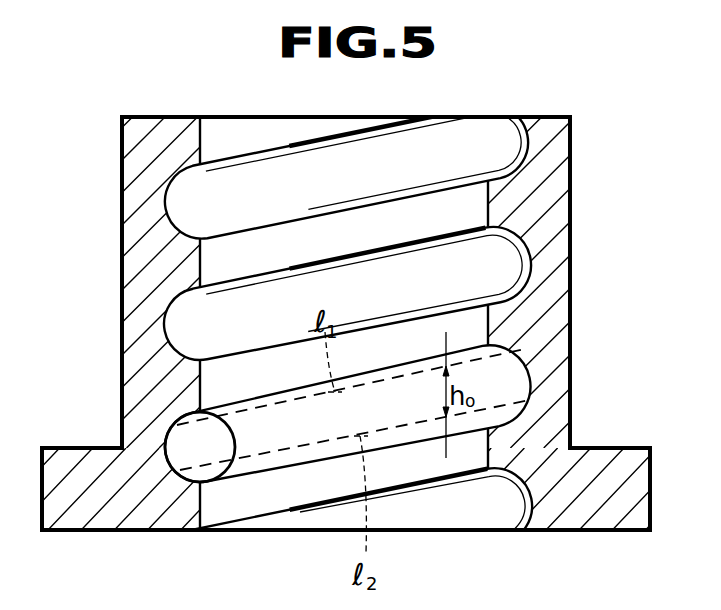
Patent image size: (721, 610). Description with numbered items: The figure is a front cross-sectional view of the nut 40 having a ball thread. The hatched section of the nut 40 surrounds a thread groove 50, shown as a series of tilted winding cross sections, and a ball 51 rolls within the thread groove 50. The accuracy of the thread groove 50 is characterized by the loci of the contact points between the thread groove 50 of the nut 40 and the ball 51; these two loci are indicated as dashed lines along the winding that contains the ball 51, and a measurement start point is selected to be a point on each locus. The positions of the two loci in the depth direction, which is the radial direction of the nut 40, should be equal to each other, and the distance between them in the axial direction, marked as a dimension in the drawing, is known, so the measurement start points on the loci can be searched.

The nut 40 is at (553, 251).
The thread groove 50 is at (450, 132).
The ball 51 is at (215, 440).